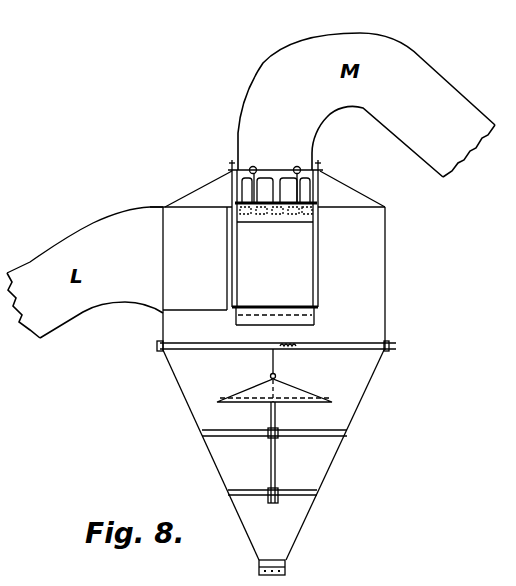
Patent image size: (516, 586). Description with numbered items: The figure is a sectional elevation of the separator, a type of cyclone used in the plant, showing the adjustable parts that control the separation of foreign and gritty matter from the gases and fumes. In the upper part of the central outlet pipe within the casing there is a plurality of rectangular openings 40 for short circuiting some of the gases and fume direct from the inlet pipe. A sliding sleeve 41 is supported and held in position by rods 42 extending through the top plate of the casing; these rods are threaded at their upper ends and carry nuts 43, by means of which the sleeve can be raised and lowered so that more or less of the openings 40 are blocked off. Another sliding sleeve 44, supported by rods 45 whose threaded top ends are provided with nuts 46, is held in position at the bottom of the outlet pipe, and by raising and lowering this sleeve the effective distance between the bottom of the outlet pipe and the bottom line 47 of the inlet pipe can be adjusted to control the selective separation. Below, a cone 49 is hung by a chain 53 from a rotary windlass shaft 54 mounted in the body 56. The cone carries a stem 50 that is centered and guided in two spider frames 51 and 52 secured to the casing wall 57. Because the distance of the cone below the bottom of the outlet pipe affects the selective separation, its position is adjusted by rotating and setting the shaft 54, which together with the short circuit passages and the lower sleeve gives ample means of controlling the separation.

The rectangular openings 40 is at (267, 190).
The sliding sleeve 41 is at (315, 213).
The rods 42 is at (295, 165).
The nuts 43 is at (293, 168).
The sliding sleeve 44 is at (315, 317).
The rods 45 is at (232, 287).
The nuts 46 is at (230, 170).
The bottom line 47 is at (180, 313).
The cone 49 is at (302, 393).
The stem 50 is at (277, 463).
The spider frame 51 is at (302, 432).
The spider frame 52 is at (285, 492).
The chain 53 is at (272, 365).
The rotary windlass shaft 54 is at (330, 345).
The body 56 is at (163, 334).
The casing wall 57 is at (188, 410).